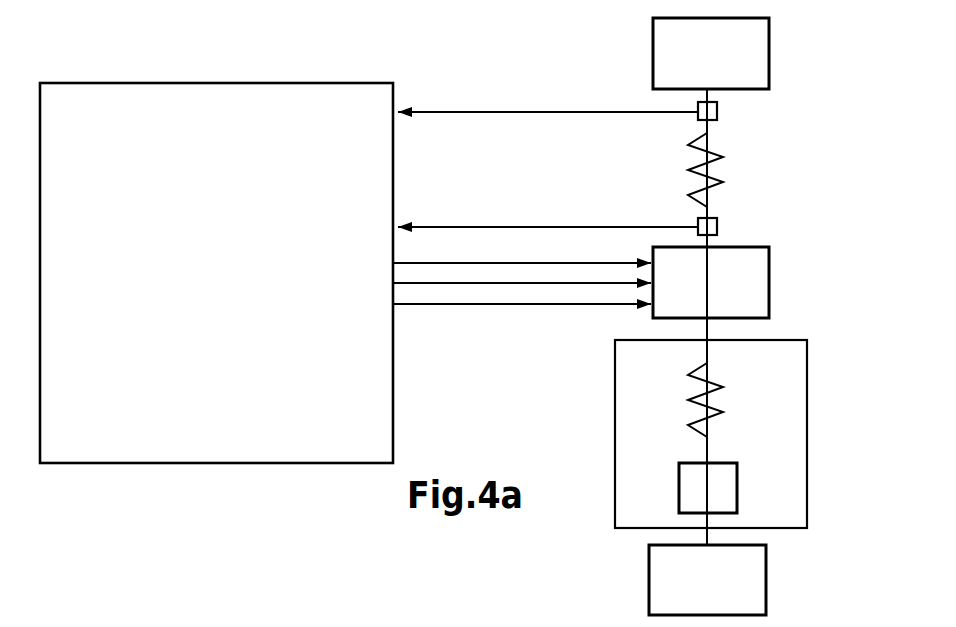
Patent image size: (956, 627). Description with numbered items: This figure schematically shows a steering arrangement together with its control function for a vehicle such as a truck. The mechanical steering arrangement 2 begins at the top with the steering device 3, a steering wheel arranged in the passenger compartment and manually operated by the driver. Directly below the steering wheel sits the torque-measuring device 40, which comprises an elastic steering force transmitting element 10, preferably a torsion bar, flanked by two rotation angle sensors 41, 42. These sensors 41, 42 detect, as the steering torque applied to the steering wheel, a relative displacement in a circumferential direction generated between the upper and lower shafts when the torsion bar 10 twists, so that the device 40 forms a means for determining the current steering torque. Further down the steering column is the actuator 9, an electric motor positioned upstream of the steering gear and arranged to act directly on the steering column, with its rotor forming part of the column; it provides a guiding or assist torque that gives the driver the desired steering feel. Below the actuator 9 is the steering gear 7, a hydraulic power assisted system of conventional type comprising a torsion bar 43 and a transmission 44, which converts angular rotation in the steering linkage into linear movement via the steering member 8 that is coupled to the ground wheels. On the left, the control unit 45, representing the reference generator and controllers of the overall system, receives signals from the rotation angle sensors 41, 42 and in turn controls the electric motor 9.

The mechanical steering arrangement 2 is at (813, 190).
The steering device 3 is at (762, 52).
The steering gear 7 is at (800, 375).
The steering member 8 is at (757, 585).
The actuator 9 is at (762, 282).
The elastic steering force transmitting element 10 is at (721, 157).
The torque-measuring device 40 is at (770, 123).
The rotation angle sensor 41 is at (717, 110).
The rotation angle sensor 42 is at (717, 226).
The torsion bar 43 is at (721, 412).
The transmission 44 is at (737, 482).
The control unit 45 is at (318, 97).